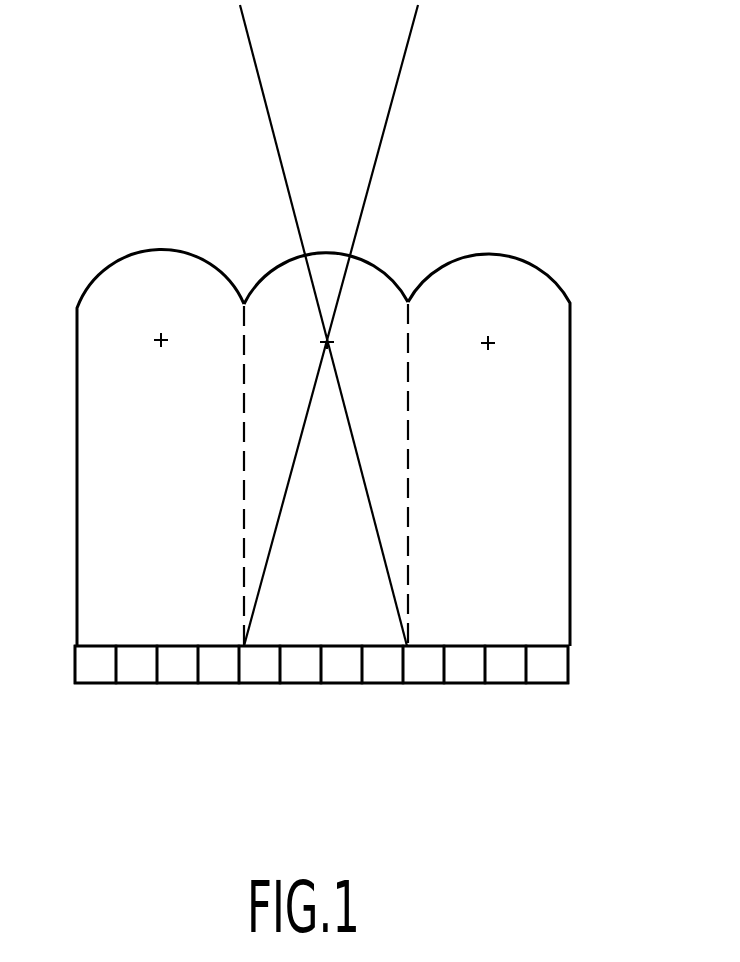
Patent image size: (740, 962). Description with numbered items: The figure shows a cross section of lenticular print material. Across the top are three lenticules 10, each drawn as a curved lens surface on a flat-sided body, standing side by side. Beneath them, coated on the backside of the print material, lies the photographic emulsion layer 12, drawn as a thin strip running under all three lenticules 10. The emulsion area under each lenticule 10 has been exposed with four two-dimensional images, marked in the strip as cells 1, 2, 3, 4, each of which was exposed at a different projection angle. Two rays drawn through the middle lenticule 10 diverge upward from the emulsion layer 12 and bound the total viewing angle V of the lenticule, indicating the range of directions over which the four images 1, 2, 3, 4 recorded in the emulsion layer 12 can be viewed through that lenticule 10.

The lenticule 10 is at (122, 266).
The photographic emulsion layer 12 is at (569, 673).
The total viewing angle V is at (389, 105).
The first 2D image exposure 1 is at (259, 664).
The second 2D image exposure 2 is at (300, 664).
The third 2D image exposure 3 is at (341, 664).
The fourth 2D image exposure 4 is at (383, 664).